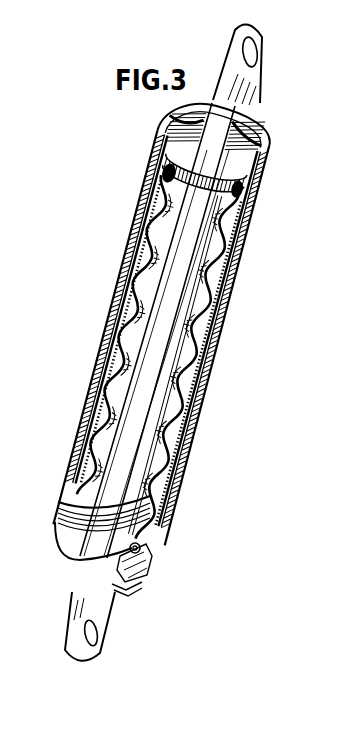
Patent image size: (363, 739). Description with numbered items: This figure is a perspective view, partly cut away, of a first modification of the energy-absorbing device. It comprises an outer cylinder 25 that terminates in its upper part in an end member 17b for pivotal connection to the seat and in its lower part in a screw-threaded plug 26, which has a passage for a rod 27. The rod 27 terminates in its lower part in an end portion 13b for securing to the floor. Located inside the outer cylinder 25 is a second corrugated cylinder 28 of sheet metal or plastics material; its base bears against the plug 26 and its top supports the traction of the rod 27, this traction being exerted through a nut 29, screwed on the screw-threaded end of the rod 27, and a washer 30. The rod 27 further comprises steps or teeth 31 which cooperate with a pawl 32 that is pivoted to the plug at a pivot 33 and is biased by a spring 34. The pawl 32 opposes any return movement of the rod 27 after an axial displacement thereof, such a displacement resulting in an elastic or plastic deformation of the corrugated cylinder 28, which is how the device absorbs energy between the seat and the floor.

The outer cylinder 25 is at (227, 298).
The nut 29 is at (267, 155).
The washer 30 is at (240, 182).
The corrugated cylinder 28 is at (217, 270).
The steps or teeth 31 is at (198, 478).
The rod 27 is at (170, 350).
The screw-threaded plug 26 is at (80, 538).
The pivot 33 is at (143, 540).
The pawl 32 is at (143, 563).
The lock washer 34 is at (133, 577).
The upper eye 17b is at (243, 78).
The end portion 13b is at (100, 615).